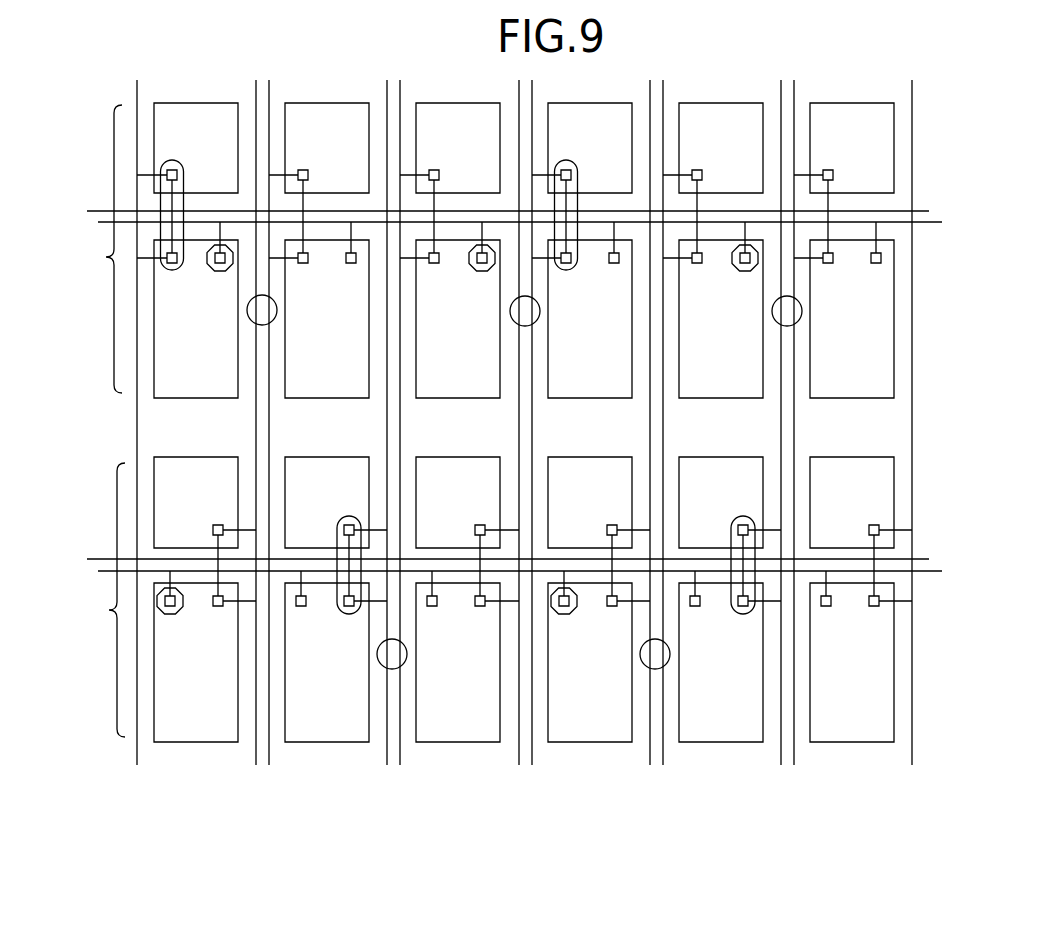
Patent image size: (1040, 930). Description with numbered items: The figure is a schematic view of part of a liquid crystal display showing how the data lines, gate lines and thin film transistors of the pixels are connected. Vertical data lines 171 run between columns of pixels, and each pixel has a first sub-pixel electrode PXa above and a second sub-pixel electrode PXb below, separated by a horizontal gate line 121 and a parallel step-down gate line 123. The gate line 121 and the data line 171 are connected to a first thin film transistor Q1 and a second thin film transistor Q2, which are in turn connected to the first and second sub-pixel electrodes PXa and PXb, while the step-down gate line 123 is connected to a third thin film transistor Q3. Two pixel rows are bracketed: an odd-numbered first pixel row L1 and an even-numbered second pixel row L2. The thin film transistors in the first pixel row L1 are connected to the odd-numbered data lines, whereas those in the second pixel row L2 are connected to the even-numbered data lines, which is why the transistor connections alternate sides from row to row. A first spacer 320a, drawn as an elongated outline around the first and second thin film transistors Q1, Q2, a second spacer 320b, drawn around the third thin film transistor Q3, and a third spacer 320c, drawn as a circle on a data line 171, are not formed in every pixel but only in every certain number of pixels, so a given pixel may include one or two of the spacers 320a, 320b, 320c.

The data line 171 is at (137, 409).
The gate line 121 is at (490, 385).
The step-down gate line 123 is at (539, 399).
The first sub-pixel electrode PXa is at (318, 103).
The second sub-pixel electrode PXb is at (319, 400).
The first thin film transistor Q1 is at (172, 167).
The second thin film transistor Q2 is at (172, 264).
The third thin film transistor Q3 is at (220, 264).
The first spacer 320a is at (185, 172).
The second spacer 320b is at (207, 244).
The third spacer 320c is at (277, 310).
The first pixel row L1 is at (97, 249).
The second pixel row L2 is at (100, 600).